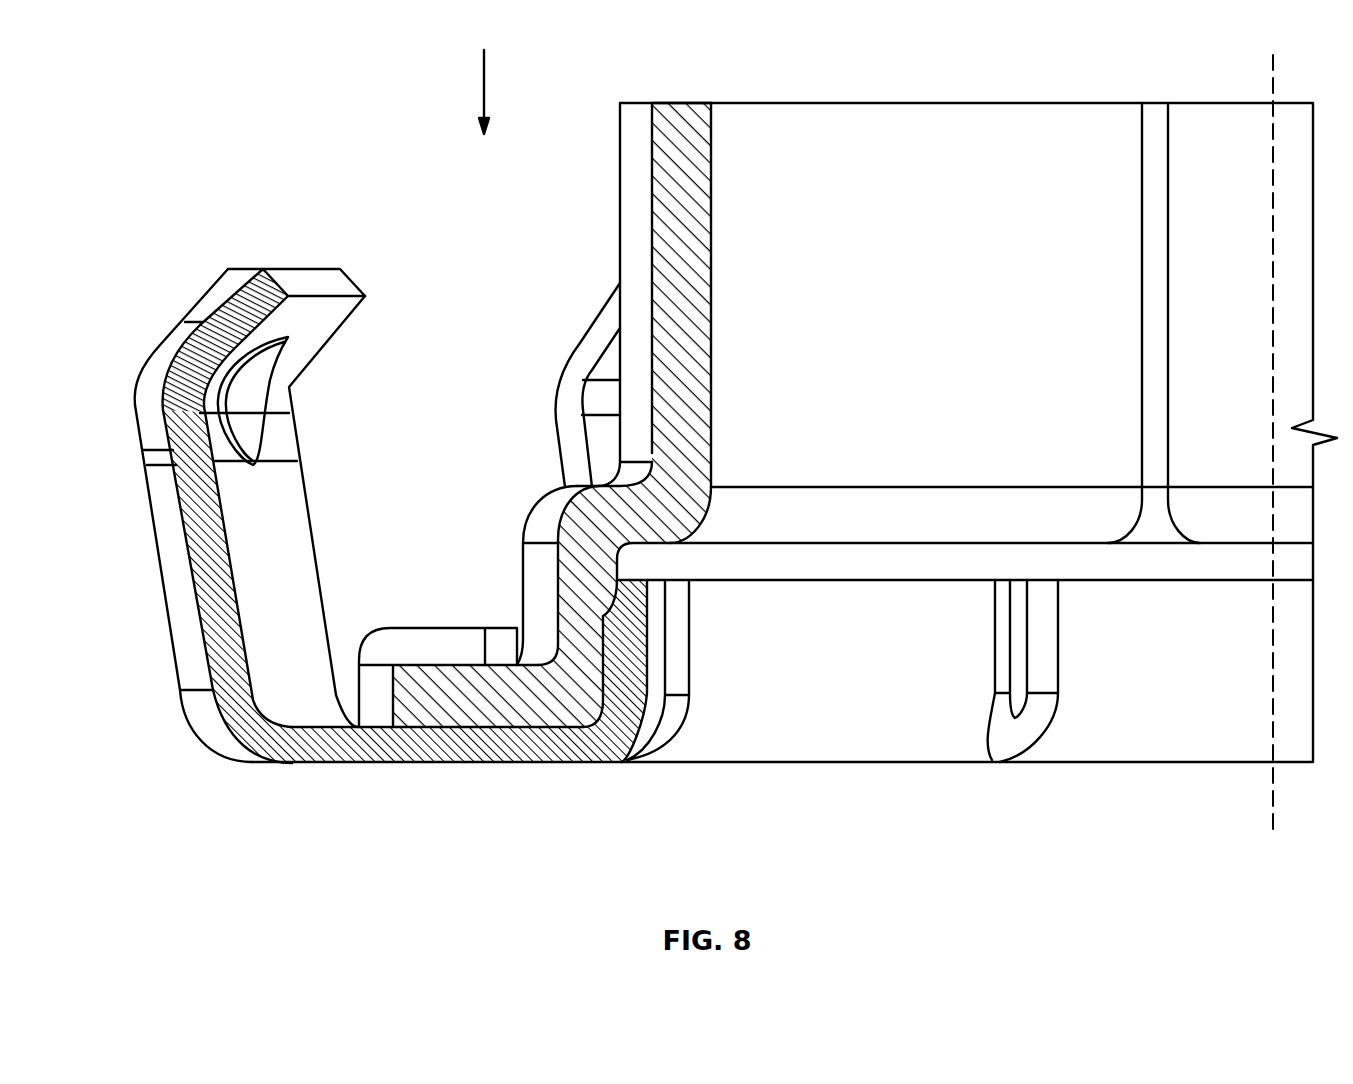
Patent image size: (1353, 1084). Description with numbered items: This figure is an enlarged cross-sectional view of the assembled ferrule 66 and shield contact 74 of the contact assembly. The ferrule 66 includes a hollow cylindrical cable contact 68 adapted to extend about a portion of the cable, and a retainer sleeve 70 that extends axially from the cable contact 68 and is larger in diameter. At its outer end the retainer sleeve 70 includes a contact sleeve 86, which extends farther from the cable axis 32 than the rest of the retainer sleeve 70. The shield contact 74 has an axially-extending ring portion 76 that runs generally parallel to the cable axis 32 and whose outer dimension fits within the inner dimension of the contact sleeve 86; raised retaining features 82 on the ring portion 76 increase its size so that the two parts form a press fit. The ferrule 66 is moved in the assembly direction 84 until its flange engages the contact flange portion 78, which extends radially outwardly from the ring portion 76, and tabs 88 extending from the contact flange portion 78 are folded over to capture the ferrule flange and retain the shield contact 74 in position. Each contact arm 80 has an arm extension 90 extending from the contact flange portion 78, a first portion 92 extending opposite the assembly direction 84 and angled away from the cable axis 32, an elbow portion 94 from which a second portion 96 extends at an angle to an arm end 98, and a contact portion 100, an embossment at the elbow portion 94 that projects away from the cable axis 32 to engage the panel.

The cable axis 32 is at (1277, 800).
The ferrule 66 is at (618, 172).
The cable contact 68 is at (707, 290).
The retainer sleeve 70 is at (697, 353).
The shield contact 74 is at (815, 750).
The ring portion 76 is at (862, 612).
The contact flange portion 78 is at (428, 765).
The contact arm 80 is at (195, 660).
The retaining feature 82 is at (1005, 735).
The assembly direction 84 is at (480, 70).
The contact sleeve 86 is at (565, 597).
The tab 88 is at (428, 650).
The arm extension 90 is at (300, 765).
The first portion 92 is at (186, 580).
The elbow portion 94 is at (262, 420).
The second portion 96 is at (222, 300).
The arm end 98 is at (298, 268).
The contact portion 100 is at (150, 376).